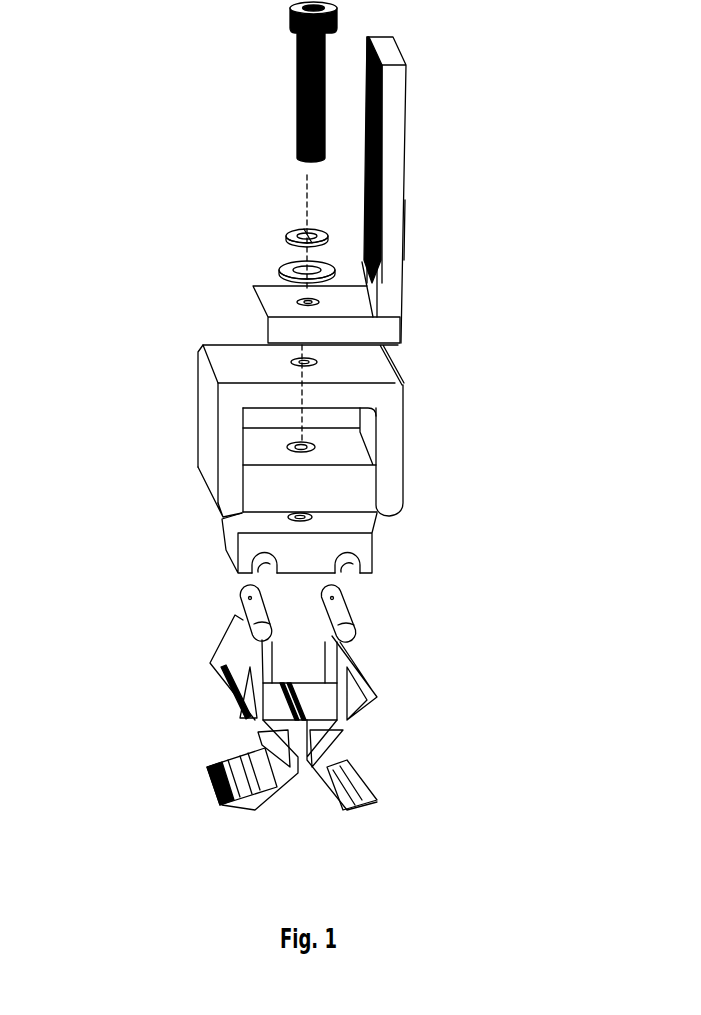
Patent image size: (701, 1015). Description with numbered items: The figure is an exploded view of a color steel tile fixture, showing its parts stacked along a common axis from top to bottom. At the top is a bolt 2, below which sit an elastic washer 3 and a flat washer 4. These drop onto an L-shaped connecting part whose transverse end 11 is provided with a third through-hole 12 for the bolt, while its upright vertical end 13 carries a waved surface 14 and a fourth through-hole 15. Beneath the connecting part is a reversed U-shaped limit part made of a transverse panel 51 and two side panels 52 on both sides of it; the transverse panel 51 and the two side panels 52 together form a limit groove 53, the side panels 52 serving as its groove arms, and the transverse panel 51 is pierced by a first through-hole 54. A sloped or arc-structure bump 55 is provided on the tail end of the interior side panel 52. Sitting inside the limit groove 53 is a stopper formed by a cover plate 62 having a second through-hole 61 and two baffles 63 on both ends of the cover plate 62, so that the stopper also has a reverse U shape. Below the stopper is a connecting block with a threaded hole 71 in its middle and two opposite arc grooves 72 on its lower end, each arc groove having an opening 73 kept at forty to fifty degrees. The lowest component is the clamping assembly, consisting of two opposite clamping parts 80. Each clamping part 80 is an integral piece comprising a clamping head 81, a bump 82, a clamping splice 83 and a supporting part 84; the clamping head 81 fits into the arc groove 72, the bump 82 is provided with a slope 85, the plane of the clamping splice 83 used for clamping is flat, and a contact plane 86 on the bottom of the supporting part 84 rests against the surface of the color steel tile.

The bolt 2 is at (298, 112).
The elastic washer 3 is at (287, 240).
The flat washer 4 is at (280, 275).
The transverse end 11 is at (290, 328).
The third through-hole 12 is at (318, 303).
The vertical end 13 is at (398, 163).
The waved surface 14 is at (377, 247).
The fourth through-hole 15 is at (381, 112).
The transverse panel 51 is at (275, 398).
The side panels 52 is at (223, 447).
The limit groove 53 is at (320, 415).
The first through-hole 54 is at (290, 363).
The bump 55 is at (225, 517).
The second through-hole 61 is at (313, 448).
The cover plate 62 is at (353, 462).
The baffles 63 is at (312, 500).
The threaded hole 71 is at (310, 518).
The arc grooves 72 is at (352, 572).
The opening 73 is at (347, 585).
The clamping parts 80 is at (299, 723).
The clamping head 81 is at (258, 631).
The bump 82 is at (233, 705).
The clamping splice 83 is at (290, 740).
The supporting part 84 is at (237, 798).
The slope 85 is at (228, 660).
The contact plane 86 is at (238, 812).